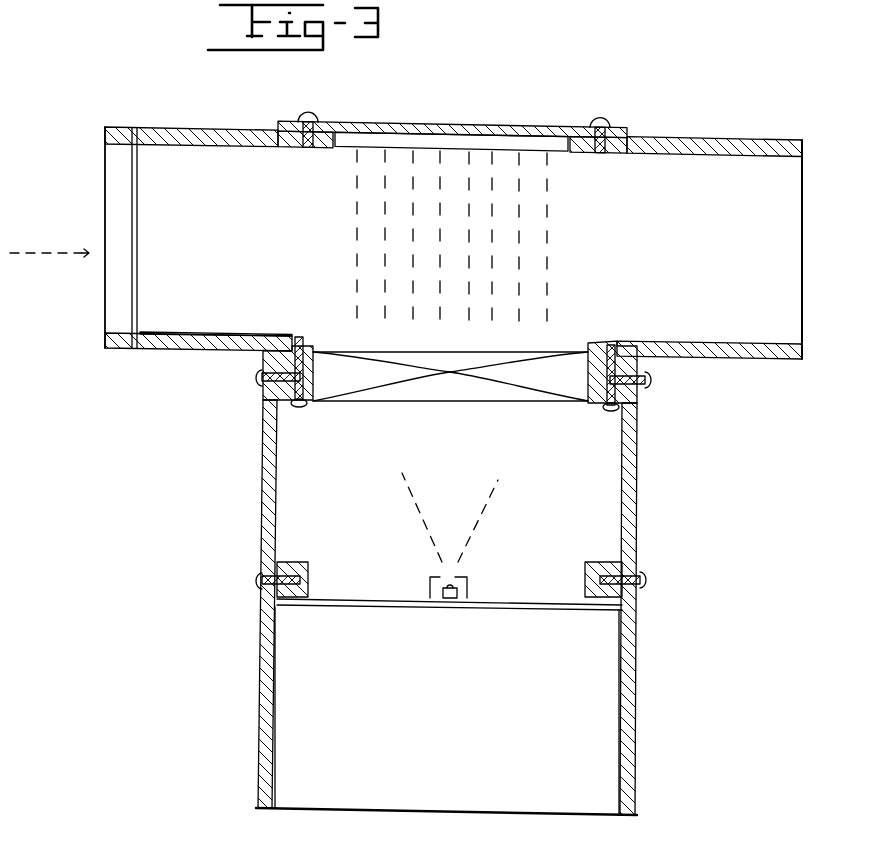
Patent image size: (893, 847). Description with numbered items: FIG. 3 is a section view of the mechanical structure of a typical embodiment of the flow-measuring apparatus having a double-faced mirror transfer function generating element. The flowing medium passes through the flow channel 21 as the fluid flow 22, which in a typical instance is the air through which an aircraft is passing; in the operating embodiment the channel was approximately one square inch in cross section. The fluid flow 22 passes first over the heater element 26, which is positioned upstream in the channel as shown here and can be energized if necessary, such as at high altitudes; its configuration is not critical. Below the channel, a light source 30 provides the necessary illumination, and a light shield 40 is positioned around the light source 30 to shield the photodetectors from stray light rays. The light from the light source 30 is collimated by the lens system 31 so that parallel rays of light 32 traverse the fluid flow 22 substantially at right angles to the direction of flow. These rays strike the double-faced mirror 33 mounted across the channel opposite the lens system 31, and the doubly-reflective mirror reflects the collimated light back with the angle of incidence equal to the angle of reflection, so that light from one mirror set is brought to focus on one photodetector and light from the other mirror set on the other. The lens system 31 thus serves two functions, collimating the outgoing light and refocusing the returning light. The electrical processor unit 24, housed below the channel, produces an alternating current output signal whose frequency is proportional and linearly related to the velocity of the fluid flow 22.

The flow channel 21 is at (700, 140).
The fluid flow 22 is at (48, 285).
The electrical processor unit 24 is at (637, 665).
The heater element 26 is at (130, 308).
The light source 30 is at (432, 597).
The lens system 31 is at (557, 406).
The parallel rays of light 32 is at (459, 246).
The double-faced mirror 33 is at (563, 152).
The light shield 40 is at (468, 579).